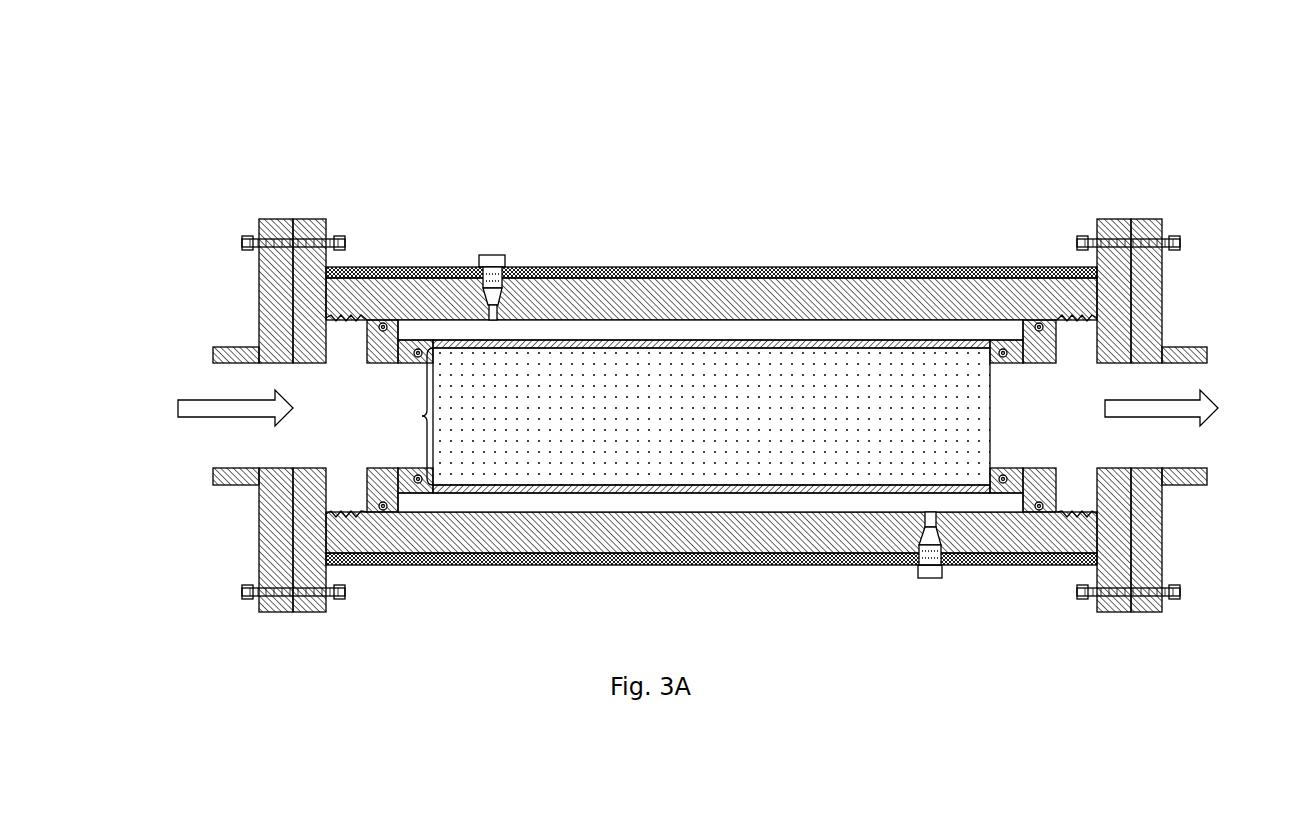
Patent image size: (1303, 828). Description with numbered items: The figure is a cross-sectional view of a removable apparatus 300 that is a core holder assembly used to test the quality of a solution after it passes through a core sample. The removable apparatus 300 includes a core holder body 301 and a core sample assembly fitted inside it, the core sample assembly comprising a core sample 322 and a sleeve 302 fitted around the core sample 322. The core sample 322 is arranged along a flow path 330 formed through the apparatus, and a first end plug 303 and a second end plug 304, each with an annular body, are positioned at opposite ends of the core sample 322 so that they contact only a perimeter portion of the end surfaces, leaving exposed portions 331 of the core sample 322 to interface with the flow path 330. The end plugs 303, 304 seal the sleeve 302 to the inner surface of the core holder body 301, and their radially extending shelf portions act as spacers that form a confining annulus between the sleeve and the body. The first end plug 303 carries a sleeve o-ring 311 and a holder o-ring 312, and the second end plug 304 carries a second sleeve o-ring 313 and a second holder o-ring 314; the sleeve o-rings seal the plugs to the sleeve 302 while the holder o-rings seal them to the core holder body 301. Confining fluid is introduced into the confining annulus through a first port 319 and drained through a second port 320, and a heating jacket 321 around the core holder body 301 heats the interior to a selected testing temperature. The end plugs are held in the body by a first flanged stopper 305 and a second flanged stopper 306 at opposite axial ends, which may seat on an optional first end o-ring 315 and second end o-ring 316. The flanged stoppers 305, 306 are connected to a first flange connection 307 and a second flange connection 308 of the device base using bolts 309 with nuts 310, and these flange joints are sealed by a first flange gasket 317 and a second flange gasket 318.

The removable apparatus 300 is at (1049, 125).
The core holder body 301 is at (720, 285).
The sleeve 302 is at (768, 340).
The first end plug 303 is at (378, 365).
The second end plug 304 is at (1035, 363).
The first flanged stopper 305 is at (326, 220).
The second flanged stopper 306 is at (1097, 220).
The first flange connection 307 is at (262, 312).
The second flange connection 308 is at (1162, 318).
The bolts 309 is at (347, 240).
The nuts 310 is at (1165, 237).
The sleeve o-ring 311 is at (407, 468).
The holder o-ring 312 is at (410, 567).
The second sleeve o-ring 313 is at (1000, 466).
The second holder o-ring 314 is at (1028, 553).
The first end o-ring 315 is at (357, 468).
The second end o-ring 316 is at (1058, 470).
The first flange gasket 317 is at (273, 470).
The second flange gasket 318 is at (1133, 470).
The first port 319 is at (917, 568).
The second port 320 is at (507, 255).
The heating jacket 321 is at (614, 266).
The core sample 322 is at (711, 416).
The flow path 330 is at (702, 408).
The exposed portions 331 is at (408, 416).